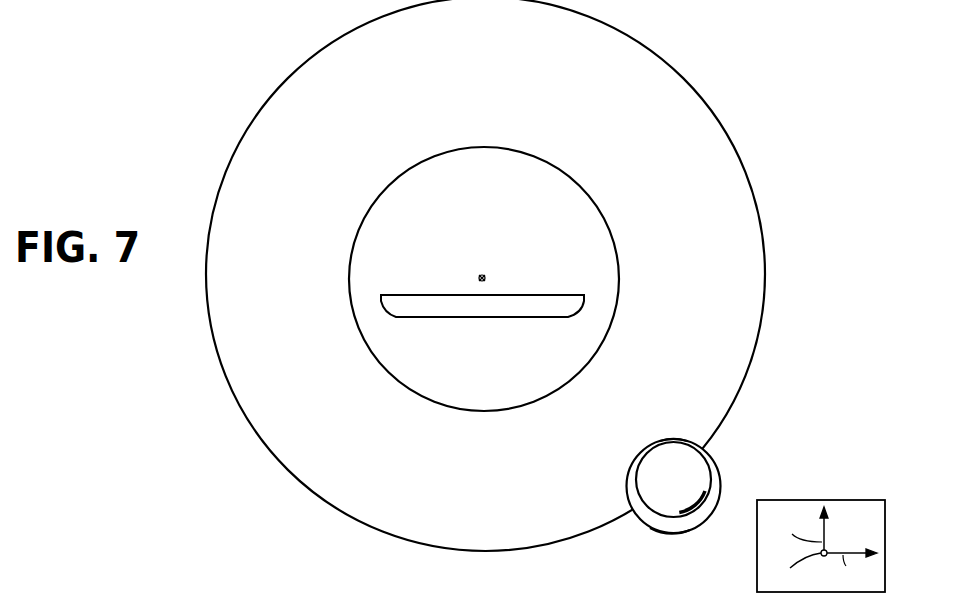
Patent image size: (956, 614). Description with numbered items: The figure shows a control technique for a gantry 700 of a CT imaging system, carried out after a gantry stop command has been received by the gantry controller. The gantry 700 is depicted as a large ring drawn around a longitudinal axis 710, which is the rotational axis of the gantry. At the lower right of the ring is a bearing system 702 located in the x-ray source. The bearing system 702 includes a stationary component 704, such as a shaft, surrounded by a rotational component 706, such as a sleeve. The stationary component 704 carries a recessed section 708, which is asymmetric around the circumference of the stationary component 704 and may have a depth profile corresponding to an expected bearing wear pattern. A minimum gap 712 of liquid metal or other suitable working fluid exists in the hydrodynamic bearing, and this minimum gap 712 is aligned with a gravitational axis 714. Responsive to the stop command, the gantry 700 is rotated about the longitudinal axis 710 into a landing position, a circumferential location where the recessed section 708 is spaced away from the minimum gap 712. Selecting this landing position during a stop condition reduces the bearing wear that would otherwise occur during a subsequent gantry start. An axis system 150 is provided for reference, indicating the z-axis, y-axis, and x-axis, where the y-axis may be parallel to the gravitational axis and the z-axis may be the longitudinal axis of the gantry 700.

The gantry 700 is at (172, 53).
The longitudinal axis 710 is at (482, 275).
The bearing system 702 is at (623, 458).
The stationary component 704 is at (692, 490).
The rotational component 706 is at (662, 532).
The recessed section 708 is at (695, 510).
The minimum gap 712 is at (672, 440).
The gravitational axis 714 is at (669, 380).
The axis system 150 is at (781, 486).